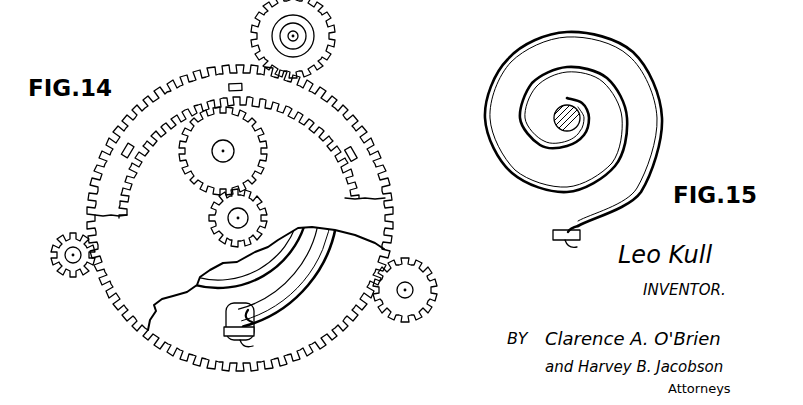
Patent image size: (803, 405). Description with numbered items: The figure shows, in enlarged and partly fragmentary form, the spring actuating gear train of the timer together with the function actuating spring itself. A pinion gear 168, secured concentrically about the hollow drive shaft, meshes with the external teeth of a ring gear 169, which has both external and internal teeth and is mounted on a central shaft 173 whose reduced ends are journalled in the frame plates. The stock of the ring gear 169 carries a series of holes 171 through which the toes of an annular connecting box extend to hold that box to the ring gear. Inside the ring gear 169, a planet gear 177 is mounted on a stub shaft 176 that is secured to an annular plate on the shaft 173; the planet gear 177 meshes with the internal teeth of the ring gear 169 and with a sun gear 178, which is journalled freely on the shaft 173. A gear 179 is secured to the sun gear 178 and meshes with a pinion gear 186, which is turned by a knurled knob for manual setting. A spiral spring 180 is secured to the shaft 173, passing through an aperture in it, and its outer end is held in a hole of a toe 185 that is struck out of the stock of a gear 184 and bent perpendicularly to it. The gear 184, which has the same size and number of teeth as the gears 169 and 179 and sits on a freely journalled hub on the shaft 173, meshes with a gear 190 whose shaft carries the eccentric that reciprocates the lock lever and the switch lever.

In FIG. 14, the pinion gear 168 is at (322, 47).
In FIG. 14, the ring gear 169 is at (332, 127).
In FIG. 14, the holes 171 is at (233, 83).
In FIG. 15, the shaft 173 is at (578, 128).
In FIG. 14, the stub shaft 176 is at (224, 151).
In FIG. 14, the planet gear 177 is at (246, 168).
In FIG. 14, the sun gear 178 is at (256, 218).
In FIG. 14, the gear 179 is at (133, 295).
In FIG. 14, the spiral spring 180 is at (281, 316).
In FIG. 15, the spiral spring 180 is at (661, 111).
In FIG. 14, the gear 184 is at (338, 318).
In FIG. 14, the toe 185 is at (227, 332).
In FIG. 15, the toe 185 is at (558, 230).
In FIG. 14, the pinion gear 186 is at (82, 268).
In FIG. 14, the gear 190 is at (414, 316).